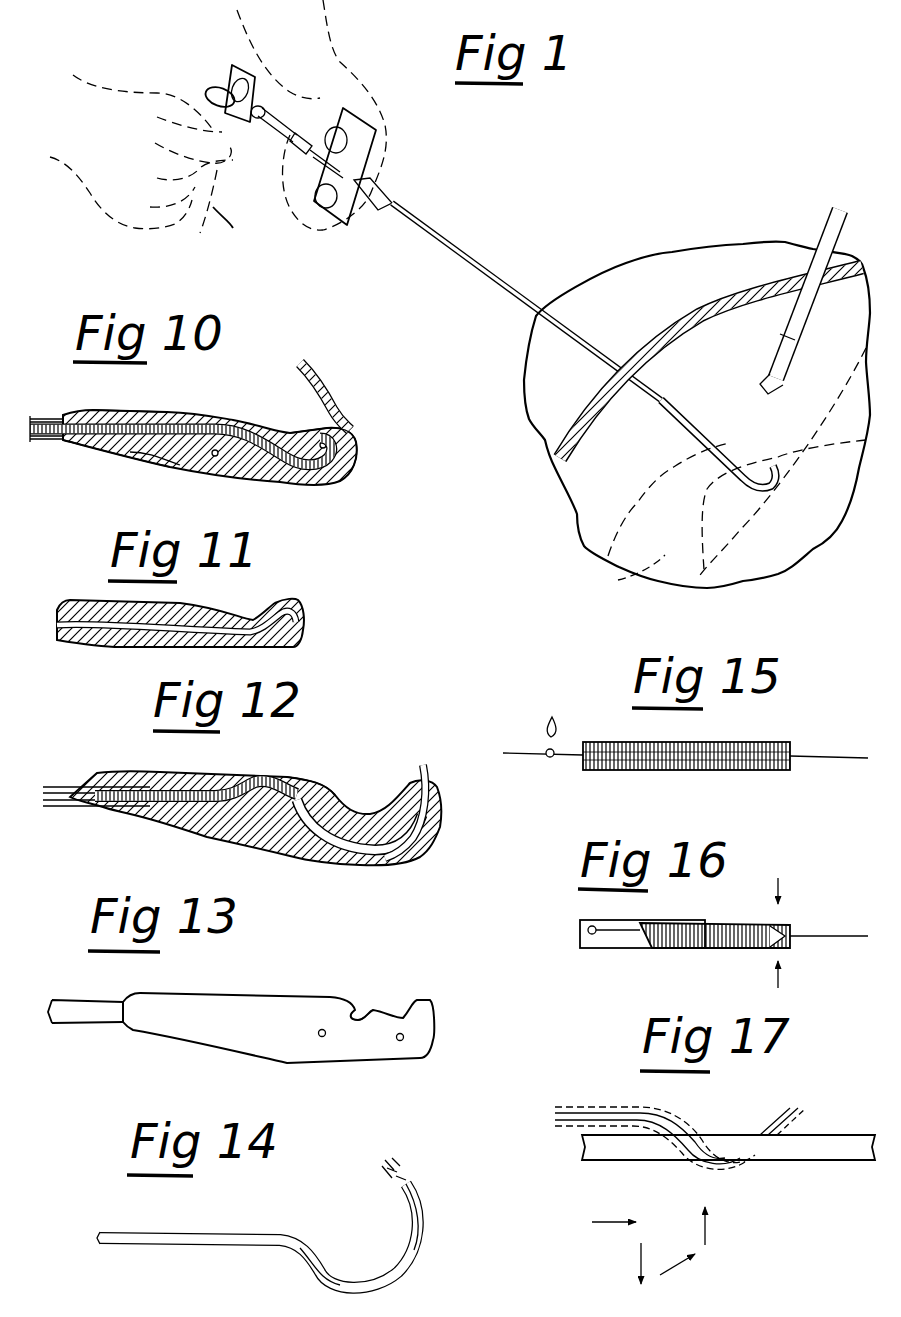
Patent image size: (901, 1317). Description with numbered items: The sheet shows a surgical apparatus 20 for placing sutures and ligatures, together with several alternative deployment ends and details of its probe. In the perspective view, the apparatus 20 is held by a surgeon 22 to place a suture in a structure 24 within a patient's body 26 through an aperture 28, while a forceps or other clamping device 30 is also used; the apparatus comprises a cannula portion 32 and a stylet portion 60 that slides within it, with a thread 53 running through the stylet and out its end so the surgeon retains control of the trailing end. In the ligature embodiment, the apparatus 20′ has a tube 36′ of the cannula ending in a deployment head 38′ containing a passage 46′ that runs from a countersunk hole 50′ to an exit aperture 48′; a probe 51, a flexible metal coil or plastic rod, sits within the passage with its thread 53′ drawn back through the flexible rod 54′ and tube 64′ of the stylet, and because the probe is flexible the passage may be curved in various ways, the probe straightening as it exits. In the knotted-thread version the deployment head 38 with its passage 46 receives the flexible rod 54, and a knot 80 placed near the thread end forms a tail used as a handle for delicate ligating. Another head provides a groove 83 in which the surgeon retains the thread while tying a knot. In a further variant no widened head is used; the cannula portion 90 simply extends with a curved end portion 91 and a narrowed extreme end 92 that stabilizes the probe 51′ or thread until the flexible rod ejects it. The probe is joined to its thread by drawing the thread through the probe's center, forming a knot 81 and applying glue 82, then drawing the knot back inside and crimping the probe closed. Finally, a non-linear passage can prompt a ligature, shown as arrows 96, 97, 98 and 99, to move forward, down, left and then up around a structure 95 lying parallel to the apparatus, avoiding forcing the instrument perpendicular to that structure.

In FIG. 1, the surgical apparatus 20 is at (470, 274).
In FIG. 1, the surgeon 22 is at (336, 42).
In FIG. 1, the structure 24 is at (625, 582).
In FIG. 1, the patient's body 26 is at (548, 372).
In FIG. 1, the aperture 28 is at (610, 352).
In FIG. 1, the forceps or other clamping device 30 is at (827, 221).
In FIG. 1, the cannula portion 32 is at (395, 193).
In FIG. 1, the thread 53 is at (213, 207).
In FIG. 1, the stylet portion 60 is at (258, 137).
In FIG. 10, the surgical apparatus 20′ is at (99, 478).
In FIG. 10, the tube 36′ is at (45, 417).
In FIG. 10, the deployment head 38′ is at (248, 483).
In FIG. 10, the passage 46′ is at (291, 436).
In FIG. 10, the exit aperture 48′ is at (341, 413).
In FIG. 10, the countersunk hole 50′ is at (103, 410).
In FIG. 10, the probe 51 is at (308, 364).
In FIG. 15, the probe 51 is at (638, 771).
In FIG. 16, the probe 51 is at (702, 950).
In FIG. 10, the thread 53′ is at (188, 466).
In FIG. 15, the thread 53′ is at (812, 765).
In FIG. 16, the thread 53′ is at (815, 940).
In FIG. 10, the flexible rod 54′ is at (158, 453).
In FIG. 10, the tube 64′ is at (52, 442).
In FIG. 12, the deployment head 38 is at (140, 771).
In FIG. 12, the passage 46 is at (253, 776).
In FIG. 17, the passage 46 is at (589, 1108).
In FIG. 12, the flexible rod 54 is at (168, 815).
In FIG. 12, the knot 80 is at (281, 851).
In FIG. 13, the groove 83 is at (364, 1009).
In FIG. 14, the cannula portion 90 is at (191, 1232).
In FIG. 14, the curved end portion 91 is at (377, 1244).
In FIG. 14, the extreme end 92 is at (421, 1182).
In FIG. 14, the probe 51′ is at (396, 1160).
In FIG. 15, the knot 81 is at (545, 768).
In FIG. 15, the glue 82 is at (548, 728).
In FIG. 17, the structure 95 is at (820, 1143).
In FIG. 17, the arrow 96 is at (617, 1221).
In FIG. 17, the arrow 97 is at (641, 1255).
In FIG. 17, the arrow 98 is at (675, 1270).
In FIG. 17, the arrow 99 is at (708, 1225).